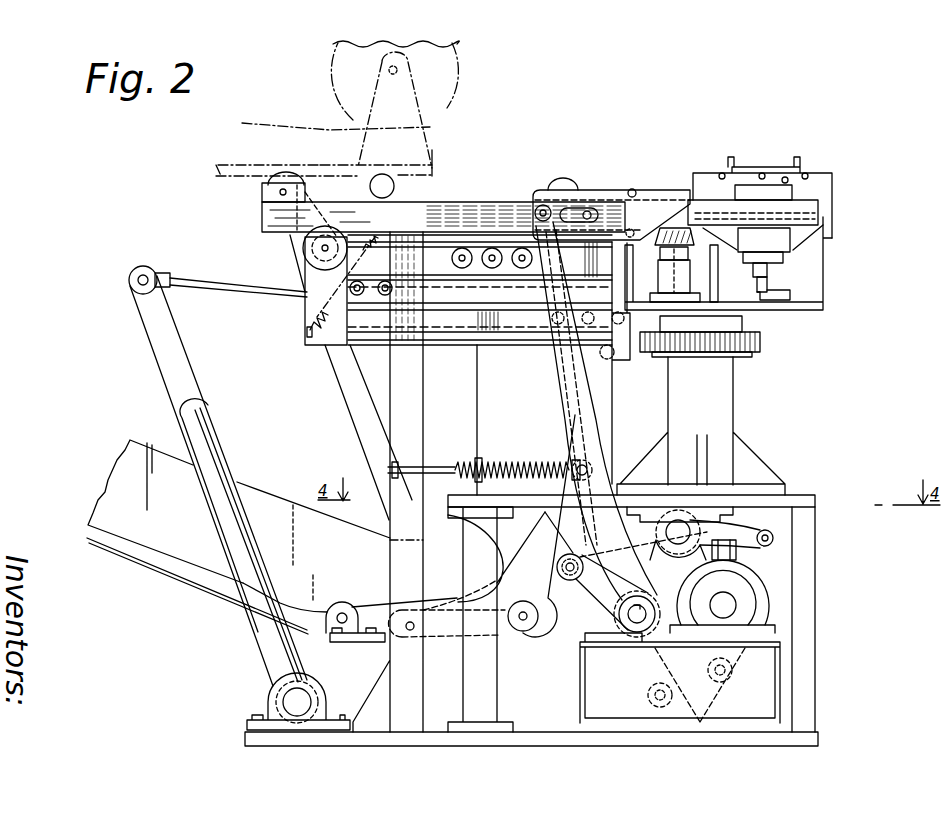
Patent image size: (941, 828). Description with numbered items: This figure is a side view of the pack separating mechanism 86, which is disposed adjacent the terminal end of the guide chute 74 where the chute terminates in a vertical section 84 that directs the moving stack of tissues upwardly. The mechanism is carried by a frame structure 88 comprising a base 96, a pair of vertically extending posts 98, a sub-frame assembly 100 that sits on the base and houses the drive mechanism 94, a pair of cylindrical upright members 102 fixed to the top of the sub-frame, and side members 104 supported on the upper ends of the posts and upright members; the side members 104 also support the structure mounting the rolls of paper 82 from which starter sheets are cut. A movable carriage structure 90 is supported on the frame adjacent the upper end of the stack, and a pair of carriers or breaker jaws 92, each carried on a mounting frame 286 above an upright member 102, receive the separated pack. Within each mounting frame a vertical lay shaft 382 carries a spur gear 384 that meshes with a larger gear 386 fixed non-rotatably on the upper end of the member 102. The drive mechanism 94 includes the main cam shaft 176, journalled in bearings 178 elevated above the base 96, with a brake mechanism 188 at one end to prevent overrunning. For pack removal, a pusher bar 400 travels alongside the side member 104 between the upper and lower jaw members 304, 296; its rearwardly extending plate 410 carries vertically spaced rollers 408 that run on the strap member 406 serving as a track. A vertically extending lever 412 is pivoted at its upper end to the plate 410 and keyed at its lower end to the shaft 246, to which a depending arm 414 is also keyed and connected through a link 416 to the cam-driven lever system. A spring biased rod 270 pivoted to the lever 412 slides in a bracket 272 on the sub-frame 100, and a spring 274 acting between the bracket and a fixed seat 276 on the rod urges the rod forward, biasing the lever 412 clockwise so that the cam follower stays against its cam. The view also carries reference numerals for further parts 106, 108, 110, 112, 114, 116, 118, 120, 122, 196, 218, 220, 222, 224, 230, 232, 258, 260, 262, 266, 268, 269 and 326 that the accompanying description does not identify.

The guide chute 74 is at (152, 430).
The rolls of paper 82 is at (330, 83).
The vertical section 84 is at (477, 385).
The stack separating mechanism 86 is at (420, 232).
The frame structure 88 is at (538, 748).
The movable carriage structure 90 is at (302, 350).
The carriers or breaker jaws 92 is at (794, 148).
The drive mechanism 94 is at (786, 600).
The base 96 is at (245, 734).
The vertically extending posts 98 is at (410, 662).
The sub-frame assembly 100 is at (822, 661).
The cylindrical upright members 102 is at (733, 405).
The side members 104 is at (262, 215).
The roller 106 is at (305, 180).
The block 108 is at (262, 193).
The bracket 110 is at (305, 296).
The rail 112 is at (433, 240).
The rail 114 is at (462, 272).
The rail 116 is at (462, 305).
The rail 118 is at (466, 335).
The pulley 120 is at (303, 246).
The rollers 122 is at (524, 270).
The main cam shaft 176 is at (735, 612).
The bearings 178 is at (750, 608).
The brake mechanism 188 is at (676, 642).
The strut 196 is at (352, 403).
The rod 218 is at (240, 286).
The arm 220 is at (203, 392).
The shaft 222 is at (305, 700).
The pillow block 224 is at (272, 698).
The crank 230 is at (678, 548).
The table 232 is at (660, 492).
The shaft 246 is at (635, 633).
The pulley rim 258 is at (772, 557).
The arm 260 is at (606, 411).
The link 262 is at (576, 582).
The link 266 is at (736, 525).
The pivot 268 is at (774, 538).
The spring 269 is at (306, 318).
The spring biased rod 270 is at (423, 466).
The bracket 272 is at (470, 485).
The spring 274 is at (503, 462).
The fixed seat 276 is at (575, 466).
The mounting frame 286 is at (828, 283).
The lower jaw member 296 is at (827, 174).
The upper jaw member 304 is at (823, 243).
The shaft 326 is at (790, 296).
The vertical lay shaft 382 is at (695, 285).
The spur gear 384 is at (618, 355).
The larger gear 386 is at (762, 341).
The pusher bar 400 is at (692, 200).
The strap member 406 is at (540, 210).
The rollers 408 is at (634, 188).
The vertically extending plate 410 is at (664, 190).
The vertically extending lever 412 is at (600, 432).
The depending arm 414 is at (648, 692).
The link 416 is at (708, 680).